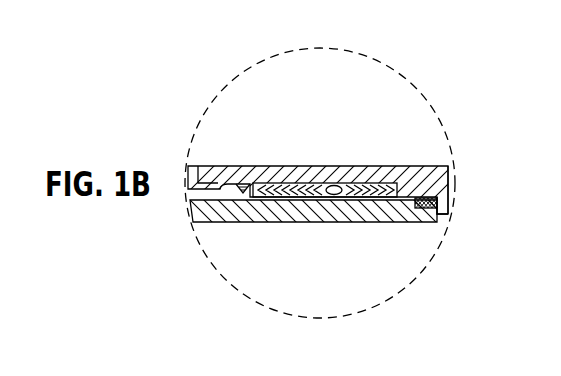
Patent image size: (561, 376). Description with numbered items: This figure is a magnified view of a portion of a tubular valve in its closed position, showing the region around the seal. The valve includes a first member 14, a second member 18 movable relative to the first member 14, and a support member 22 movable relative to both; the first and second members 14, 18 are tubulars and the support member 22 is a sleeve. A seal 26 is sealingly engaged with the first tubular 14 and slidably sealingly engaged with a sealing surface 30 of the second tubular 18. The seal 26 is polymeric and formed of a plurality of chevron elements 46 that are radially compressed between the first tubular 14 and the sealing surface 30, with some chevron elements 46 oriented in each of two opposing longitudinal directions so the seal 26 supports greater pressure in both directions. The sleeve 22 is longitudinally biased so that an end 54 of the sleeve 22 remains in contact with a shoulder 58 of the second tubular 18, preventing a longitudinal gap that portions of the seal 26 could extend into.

The first member 14 is at (280, 166).
The second member 18 is at (233, 213).
The support member 22 is at (449, 168).
The seal 26 is at (357, 167).
The sealing surface 30 is at (242, 189).
The chevron elements 46 is at (294, 188).
The end 54 is at (427, 201).
The shoulder 58 is at (440, 210).